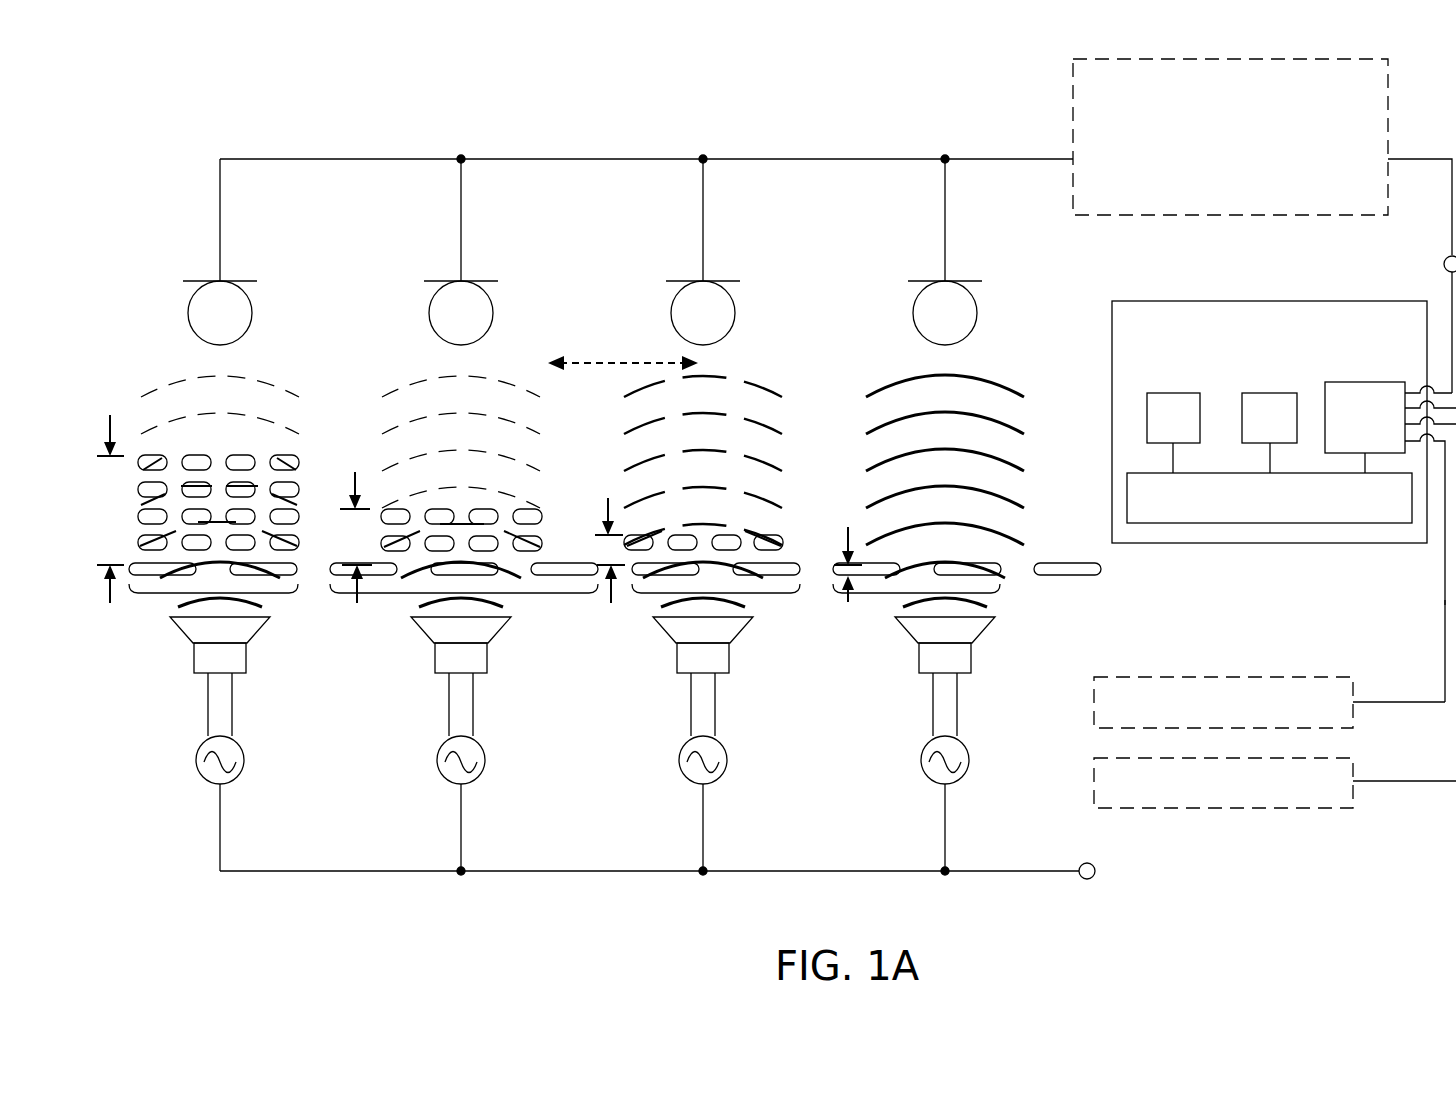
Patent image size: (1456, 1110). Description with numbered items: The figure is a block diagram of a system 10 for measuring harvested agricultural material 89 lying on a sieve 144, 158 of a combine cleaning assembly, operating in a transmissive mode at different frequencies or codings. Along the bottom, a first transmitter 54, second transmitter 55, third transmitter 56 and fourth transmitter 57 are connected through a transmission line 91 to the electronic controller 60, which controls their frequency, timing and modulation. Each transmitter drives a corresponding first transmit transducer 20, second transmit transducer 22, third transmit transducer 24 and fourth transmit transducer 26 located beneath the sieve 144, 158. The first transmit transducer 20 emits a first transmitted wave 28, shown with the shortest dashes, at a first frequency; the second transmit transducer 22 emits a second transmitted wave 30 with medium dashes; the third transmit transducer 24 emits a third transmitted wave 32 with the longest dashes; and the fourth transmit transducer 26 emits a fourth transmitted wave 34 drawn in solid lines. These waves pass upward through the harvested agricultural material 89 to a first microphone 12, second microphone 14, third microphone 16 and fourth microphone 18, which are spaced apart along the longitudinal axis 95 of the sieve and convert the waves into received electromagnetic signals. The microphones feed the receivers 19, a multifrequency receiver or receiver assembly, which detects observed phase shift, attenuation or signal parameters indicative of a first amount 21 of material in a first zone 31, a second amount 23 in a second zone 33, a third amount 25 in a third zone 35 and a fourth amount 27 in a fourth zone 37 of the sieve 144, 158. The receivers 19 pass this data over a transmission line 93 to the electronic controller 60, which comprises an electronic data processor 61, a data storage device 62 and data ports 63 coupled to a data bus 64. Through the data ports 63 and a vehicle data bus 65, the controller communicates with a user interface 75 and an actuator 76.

The system 10 is at (942, 100).
The first microphone 12 is at (252, 317).
The second microphone 14 is at (493, 317).
The third microphone 16 is at (735, 317).
The fourth microphone 18 is at (977, 317).
The receivers 19 is at (1230, 137).
The first transmit transducer 20 is at (247, 660).
The second transmit transducer 22 is at (488, 660).
The third transmit transducer 24 is at (730, 660).
The fourth transmit transducer 26 is at (972, 660).
The first amount 21 is at (113, 492).
The second amount 23 is at (355, 521).
The third amount 25 is at (609, 534).
The fourth amount 27 is at (851, 549).
The first transmitted wave 28 is at (289, 357).
The second transmitted wave 30 is at (530, 357).
The third transmitted wave 32 is at (772, 357).
The fourth transmitted wave 34 is at (1015, 357).
The first zone 31 is at (157, 593).
The second zone 33 is at (388, 593).
The third zone 35 is at (648, 593).
The fourth zone 37 is at (878, 593).
The first transmitter 54 is at (228, 783).
The second transmitter 55 is at (469, 783).
The third transmitter 56 is at (711, 783).
The fourth transmitter 57 is at (953, 783).
The electronic controller 60 is at (1284, 501).
The electronic data processor 61 is at (1188, 432).
The data storage device 62 is at (1285, 432).
The data ports 63 is at (1380, 432).
The data bus 64 is at (1285, 511).
The vehicle data bus 65 is at (1445, 602).
The user interface 75 is at (1275, 783).
The actuator 76 is at (1269, 702).
The harvested agricultural material 89 is at (303, 442).
The transmission line 91 is at (1090, 880).
The transmission line 93 is at (1444, 264).
The longitudinal axis 95 is at (626, 358).
The sieve 144 is at (695, 599).
The sieve 158 is at (1080, 576).